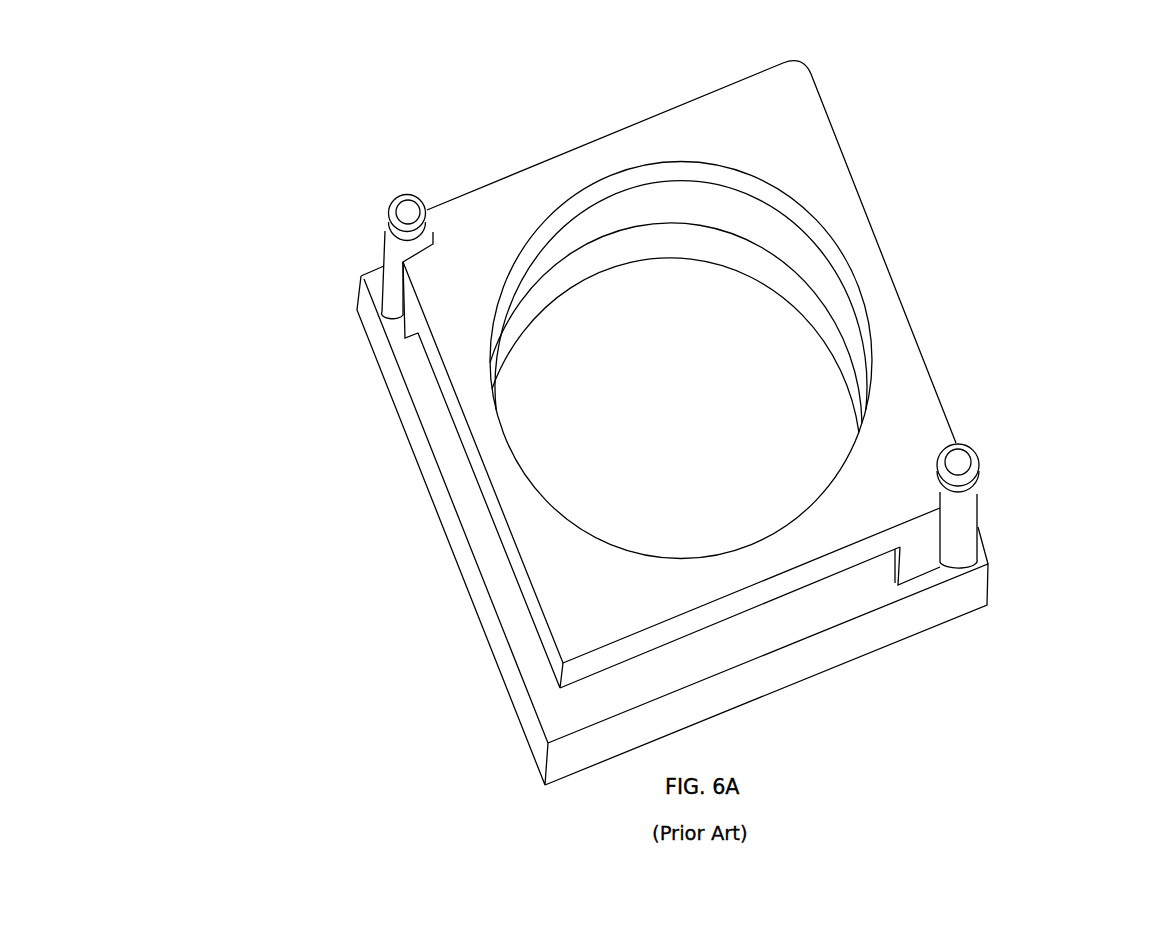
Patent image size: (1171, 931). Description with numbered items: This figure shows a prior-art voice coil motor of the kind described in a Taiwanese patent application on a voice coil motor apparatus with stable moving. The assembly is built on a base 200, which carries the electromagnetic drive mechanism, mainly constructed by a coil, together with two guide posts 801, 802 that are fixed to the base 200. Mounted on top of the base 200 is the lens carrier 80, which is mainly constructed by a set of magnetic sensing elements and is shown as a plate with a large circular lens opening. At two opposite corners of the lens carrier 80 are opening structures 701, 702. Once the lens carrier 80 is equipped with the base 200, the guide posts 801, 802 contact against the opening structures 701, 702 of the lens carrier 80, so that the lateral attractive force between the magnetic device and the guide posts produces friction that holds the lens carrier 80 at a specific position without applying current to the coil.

The lens carrier 80 is at (902, 368).
The base 200 is at (847, 645).
The guide post 801 is at (975, 458).
The guide post 802 is at (391, 212).
The opening structure 701 is at (959, 542).
The opening structure 702 is at (384, 289).